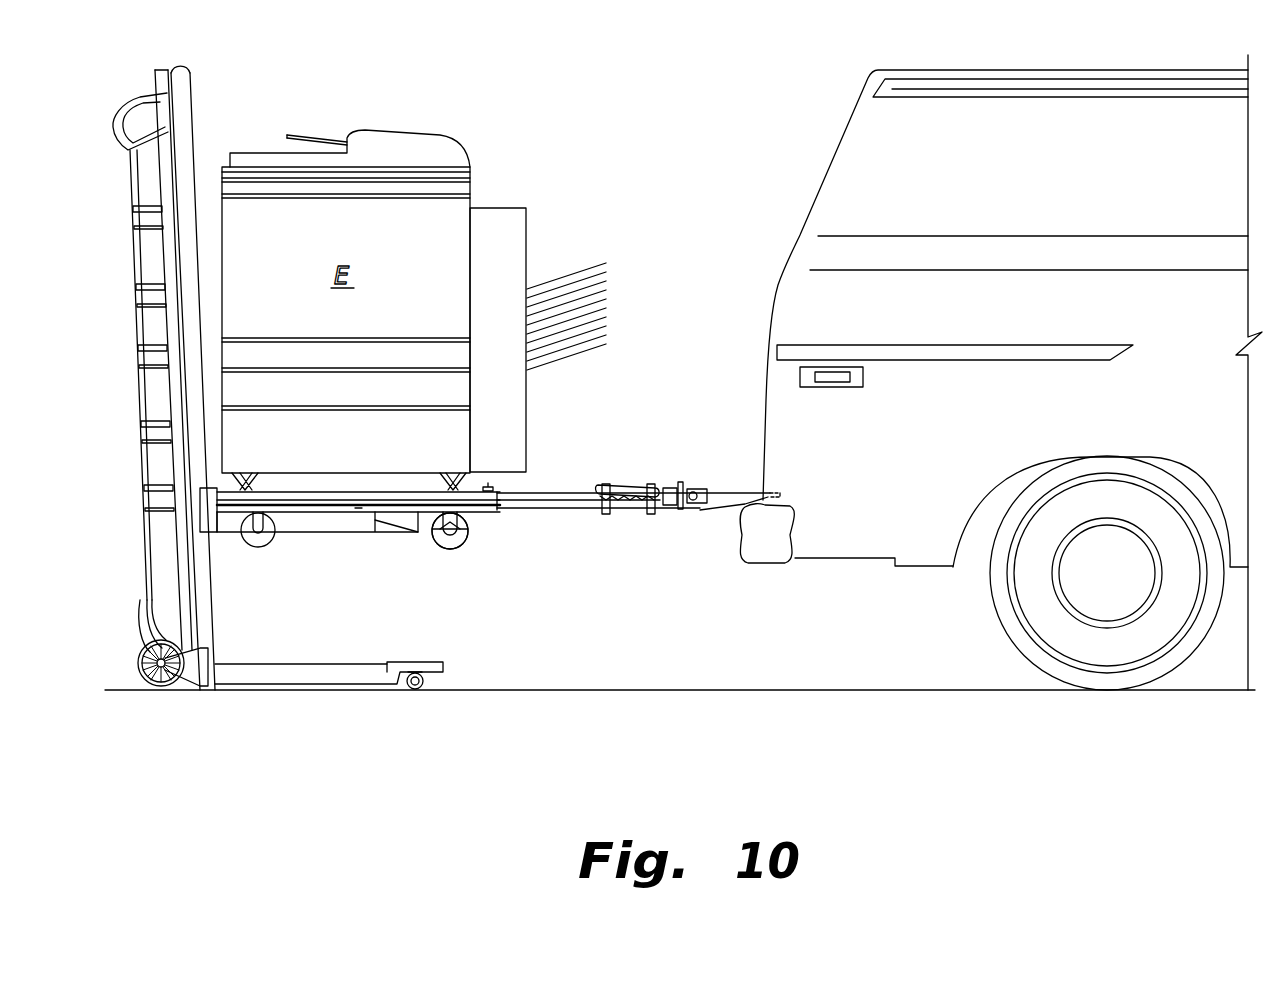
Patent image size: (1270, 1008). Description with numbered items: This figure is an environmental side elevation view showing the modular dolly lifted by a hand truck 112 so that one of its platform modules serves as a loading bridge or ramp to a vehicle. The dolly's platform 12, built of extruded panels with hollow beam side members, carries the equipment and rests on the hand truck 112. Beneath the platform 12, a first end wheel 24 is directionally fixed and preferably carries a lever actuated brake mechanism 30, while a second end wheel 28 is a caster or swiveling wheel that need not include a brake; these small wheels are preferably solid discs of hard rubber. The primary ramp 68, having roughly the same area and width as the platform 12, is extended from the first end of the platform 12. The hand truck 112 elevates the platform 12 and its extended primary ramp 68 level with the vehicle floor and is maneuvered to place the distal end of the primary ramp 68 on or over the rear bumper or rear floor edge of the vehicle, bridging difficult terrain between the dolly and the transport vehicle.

The platform 12 is at (336, 490).
The first end wheel 24 is at (445, 550).
The second end wheel 28 is at (266, 546).
The brake mechanism 30 is at (468, 540).
The primary ramp 68 is at (580, 475).
The hand truck 112 is at (288, 712).